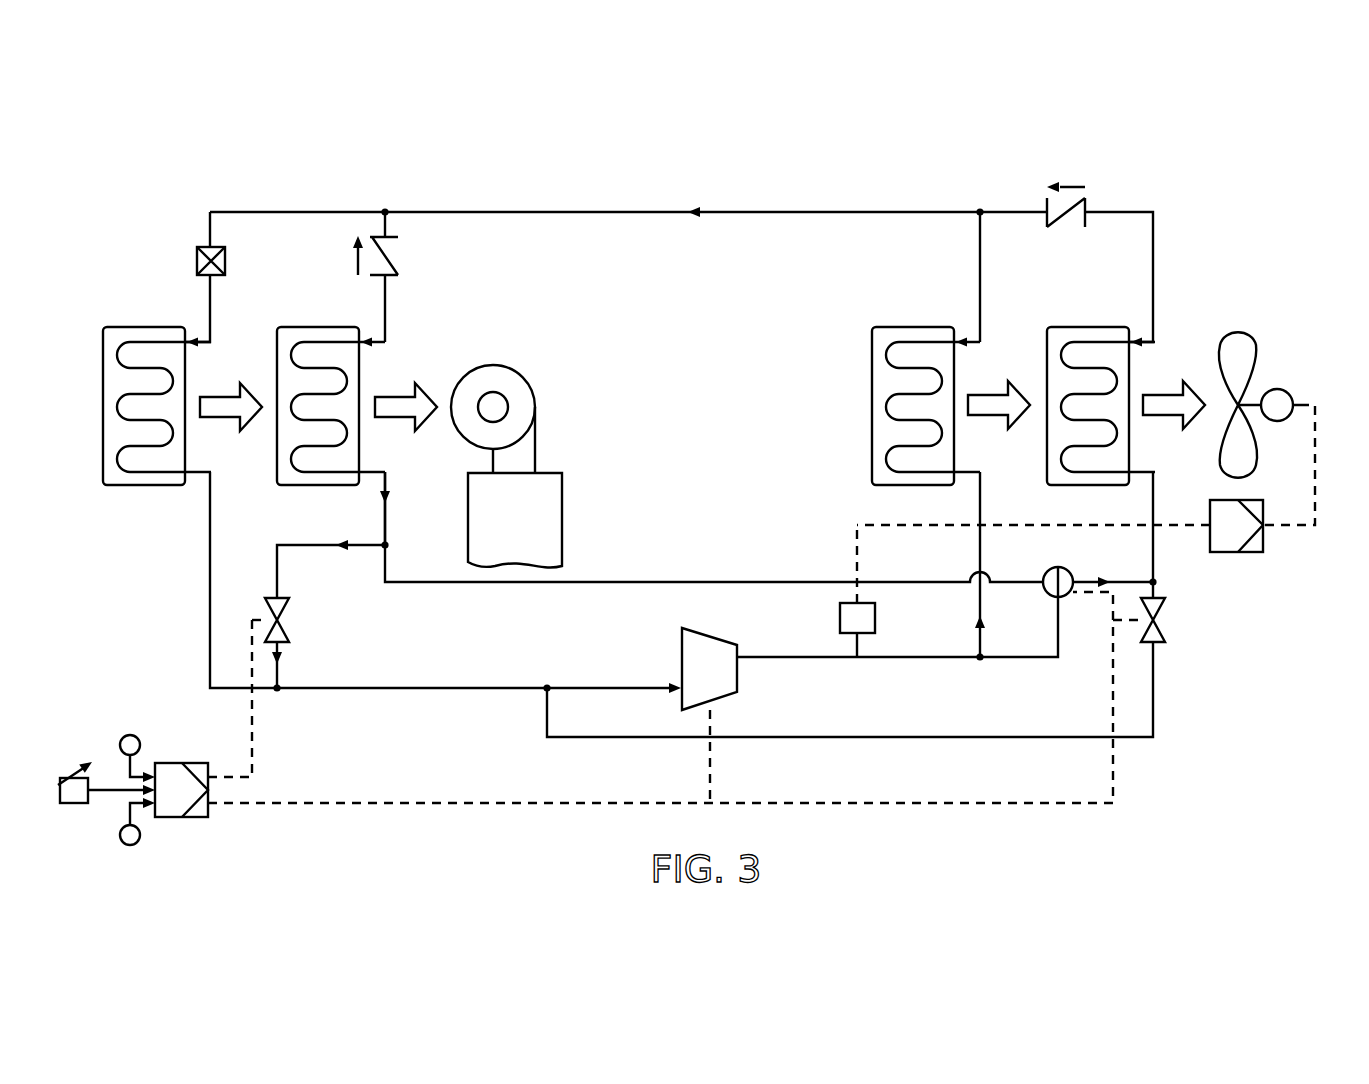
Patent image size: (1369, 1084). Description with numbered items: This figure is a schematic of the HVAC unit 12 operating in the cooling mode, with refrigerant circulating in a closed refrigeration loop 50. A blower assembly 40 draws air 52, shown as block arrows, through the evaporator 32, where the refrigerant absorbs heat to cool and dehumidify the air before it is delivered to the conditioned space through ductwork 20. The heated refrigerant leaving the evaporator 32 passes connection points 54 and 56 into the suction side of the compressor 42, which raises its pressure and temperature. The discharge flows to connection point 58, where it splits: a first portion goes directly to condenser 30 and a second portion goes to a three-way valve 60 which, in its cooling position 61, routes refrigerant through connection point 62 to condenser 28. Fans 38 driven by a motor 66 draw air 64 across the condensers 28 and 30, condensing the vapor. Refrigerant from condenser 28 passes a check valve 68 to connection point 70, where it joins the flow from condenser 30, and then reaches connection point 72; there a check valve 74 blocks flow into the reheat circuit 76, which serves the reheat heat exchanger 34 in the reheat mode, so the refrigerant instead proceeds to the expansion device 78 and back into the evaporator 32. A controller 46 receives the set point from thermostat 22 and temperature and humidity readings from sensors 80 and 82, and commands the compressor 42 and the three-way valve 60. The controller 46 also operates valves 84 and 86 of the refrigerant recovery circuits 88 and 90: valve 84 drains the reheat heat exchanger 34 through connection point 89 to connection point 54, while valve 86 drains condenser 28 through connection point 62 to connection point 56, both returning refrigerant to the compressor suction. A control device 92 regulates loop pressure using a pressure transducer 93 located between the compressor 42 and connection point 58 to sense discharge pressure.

The HVAC unit 12 is at (1142, 141).
The ductwork 20 is at (562, 520).
The thermostat 22 is at (72, 805).
The condenser 28 is at (1110, 328).
The condenser 30 is at (935, 328).
The evaporator 32 is at (145, 328).
The reheat heat exchanger 34 is at (320, 328).
The fan 38 is at (1255, 345).
The blower assembly 40 is at (512, 372).
The compressor 42 is at (707, 633).
The controller 46 is at (196, 818).
The closed refrigeration loop 50 is at (1170, 263).
The air 52 is at (228, 418).
The connection point 54 is at (280, 692).
The connection point 56 is at (549, 686).
The connection point 58 is at (978, 660).
The three-way valve 60 is at (1070, 570).
The cooling position 61 is at (1046, 560).
The connection point 62 is at (1158, 584).
The air 64 is at (996, 418).
The motor 66 is at (1294, 395).
The check valve 68 is at (1066, 215).
The connection point 70 is at (980, 211).
The connection point 72 is at (387, 211).
The check valve 74 is at (395, 257).
The reheat circuit 76 is at (390, 305).
The expansion device 78 is at (196, 262).
The sensor 80 is at (124, 843).
The sensor 82 is at (124, 738).
The valve 84 is at (290, 614).
The valve 86 is at (1167, 625).
The refrigerant recovery circuit 88 is at (303, 543).
The connection point 89 is at (388, 545).
The refrigerant recovery circuit 90 is at (1156, 690).
The control device 92 is at (1255, 553).
The pressure transducer 93 is at (877, 618).